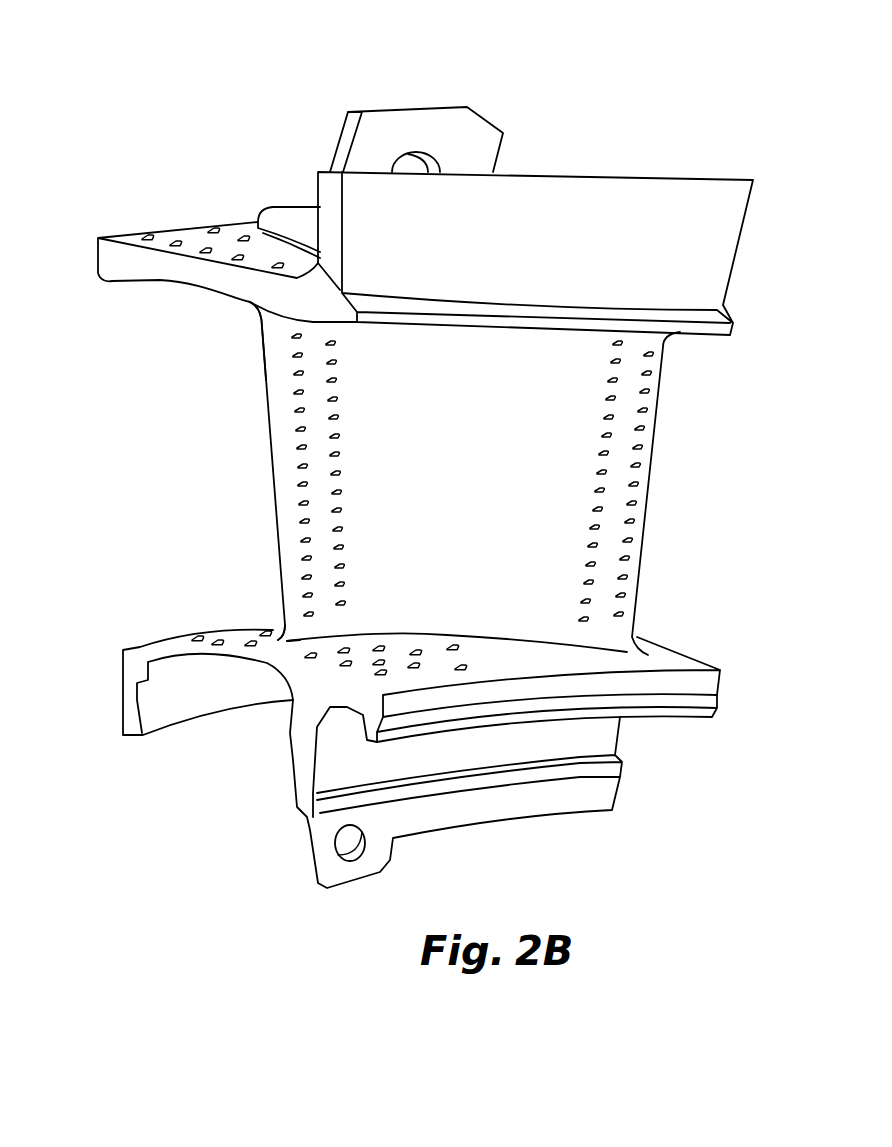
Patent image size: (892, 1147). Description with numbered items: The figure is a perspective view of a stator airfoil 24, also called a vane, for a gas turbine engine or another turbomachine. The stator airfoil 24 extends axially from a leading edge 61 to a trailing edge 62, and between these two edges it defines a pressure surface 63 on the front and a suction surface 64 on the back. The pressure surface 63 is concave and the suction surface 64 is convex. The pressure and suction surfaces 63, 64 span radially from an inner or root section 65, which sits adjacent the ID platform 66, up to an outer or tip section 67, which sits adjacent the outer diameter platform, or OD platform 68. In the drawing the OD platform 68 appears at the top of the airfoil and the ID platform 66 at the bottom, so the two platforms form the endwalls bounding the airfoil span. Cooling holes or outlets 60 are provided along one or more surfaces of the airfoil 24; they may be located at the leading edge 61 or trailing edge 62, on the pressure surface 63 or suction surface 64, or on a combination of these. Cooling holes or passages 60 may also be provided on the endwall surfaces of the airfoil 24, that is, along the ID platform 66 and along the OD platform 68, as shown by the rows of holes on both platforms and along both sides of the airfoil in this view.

The stator airfoil 24 is at (125, 98).
The cooling holes 60 is at (213, 228).
The leading edge 61 is at (262, 363).
The trailing edge 62 is at (640, 533).
The pressure surface 63 is at (383, 484).
The suction surface 64 is at (655, 474).
The inner section 65 is at (295, 620).
The ID platform 66 is at (710, 680).
The outer section 67 is at (273, 327).
The OD platform 68 is at (110, 267).